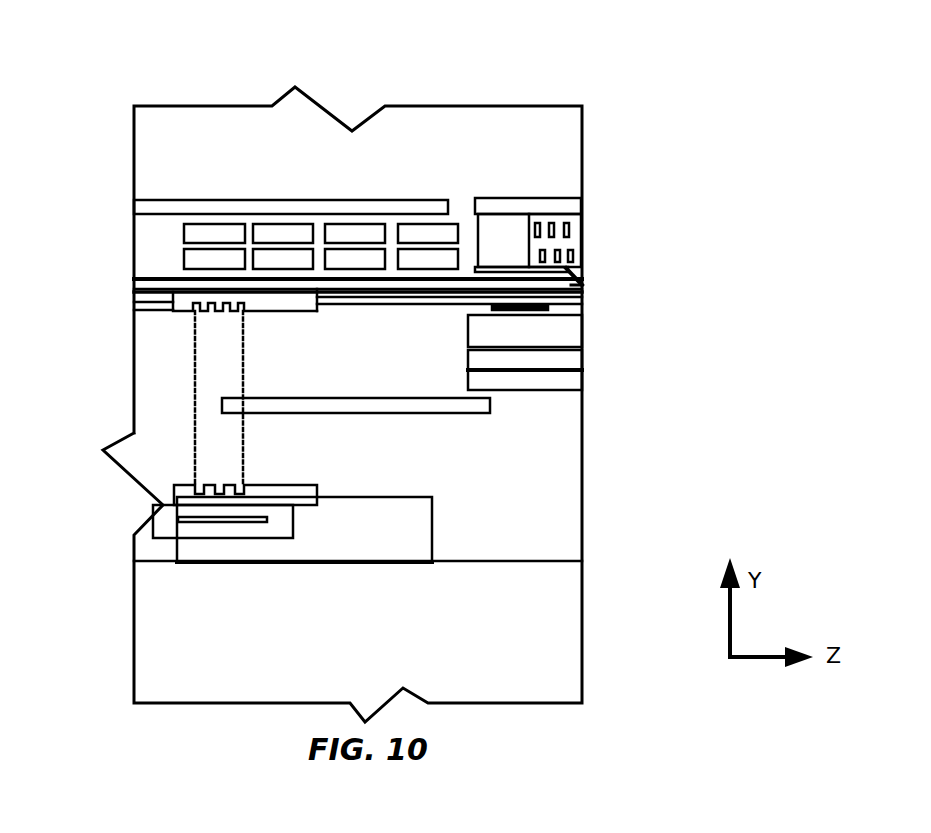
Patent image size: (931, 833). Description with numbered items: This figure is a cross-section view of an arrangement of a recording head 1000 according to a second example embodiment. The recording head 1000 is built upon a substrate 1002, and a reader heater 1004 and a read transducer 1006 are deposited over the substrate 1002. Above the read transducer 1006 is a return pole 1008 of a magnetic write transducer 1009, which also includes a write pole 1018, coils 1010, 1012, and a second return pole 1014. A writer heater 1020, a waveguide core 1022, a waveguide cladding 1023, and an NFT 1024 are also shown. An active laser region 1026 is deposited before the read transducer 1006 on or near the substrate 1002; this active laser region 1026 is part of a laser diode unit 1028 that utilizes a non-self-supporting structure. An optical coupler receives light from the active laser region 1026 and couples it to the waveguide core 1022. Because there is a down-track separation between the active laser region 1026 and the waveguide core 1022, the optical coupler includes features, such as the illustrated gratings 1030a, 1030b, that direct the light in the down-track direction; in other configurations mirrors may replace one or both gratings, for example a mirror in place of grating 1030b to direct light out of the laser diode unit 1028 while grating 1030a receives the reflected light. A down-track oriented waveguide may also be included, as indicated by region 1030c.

The recording head 1000 is at (512, 62).
The substrate 1002 is at (220, 693).
The reader heater 1004 is at (382, 413).
The read transducer 1006 is at (560, 390).
The return pole 1008 is at (582, 335).
The magnetic write transducer 1009 is at (722, 268).
The coil 1010 is at (372, 224).
The coil 1012 is at (568, 255).
The second return pole 1014 is at (575, 203).
The write pole 1018 is at (577, 283).
The writer heater 1020 is at (548, 308).
The waveguide core 1022 is at (332, 292).
The waveguide cladding 1023 is at (432, 282).
The NFT 1024 is at (580, 286).
The active laser region 1026 is at (223, 522).
The laser diode unit 1028 is at (347, 550).
The grating 1030a is at (173, 310).
The grating 1030b is at (173, 490).
The down-track oriented waveguide region 1030c is at (193, 375).